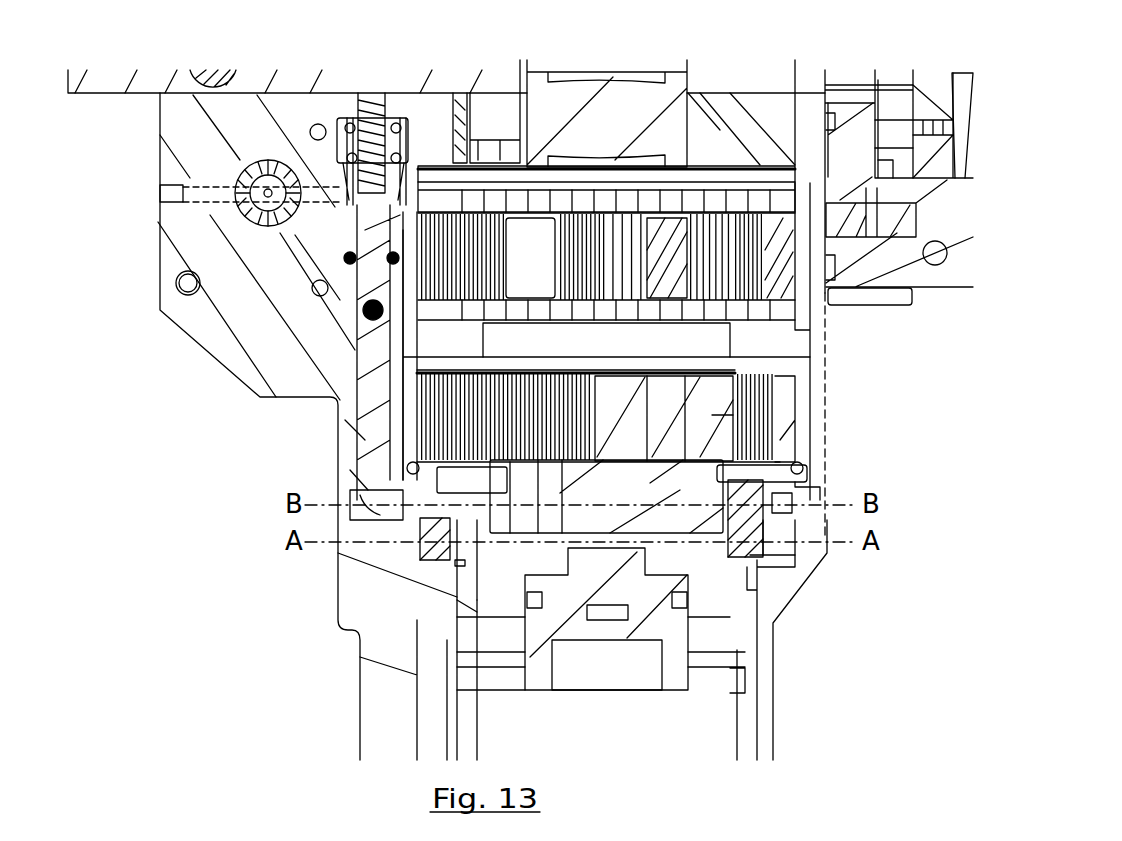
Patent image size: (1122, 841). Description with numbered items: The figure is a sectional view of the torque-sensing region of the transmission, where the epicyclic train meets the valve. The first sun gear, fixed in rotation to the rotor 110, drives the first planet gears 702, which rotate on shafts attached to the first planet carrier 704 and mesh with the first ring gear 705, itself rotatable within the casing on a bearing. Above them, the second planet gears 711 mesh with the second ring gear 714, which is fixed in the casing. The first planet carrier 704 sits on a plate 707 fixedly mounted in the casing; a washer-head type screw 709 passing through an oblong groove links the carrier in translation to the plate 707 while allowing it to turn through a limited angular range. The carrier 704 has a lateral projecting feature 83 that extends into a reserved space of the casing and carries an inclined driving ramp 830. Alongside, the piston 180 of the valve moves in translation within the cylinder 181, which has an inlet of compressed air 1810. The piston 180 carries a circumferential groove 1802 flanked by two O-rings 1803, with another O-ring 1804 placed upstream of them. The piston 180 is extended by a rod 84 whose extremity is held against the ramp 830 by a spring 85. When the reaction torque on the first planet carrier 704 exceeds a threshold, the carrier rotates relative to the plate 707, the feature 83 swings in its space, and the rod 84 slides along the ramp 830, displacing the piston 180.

The piston 180 is at (340, 110).
The O-ring 1804 is at (356, 100).
The spring 85 is at (374, 100).
The cylinder 181 is at (398, 128).
The second planet gears 711 is at (713, 253).
The inlet of compressed air 1810 is at (350, 167).
The O-rings 1803 is at (345, 237).
The circumferential groove 1802 is at (350, 258).
The rod 84 is at (382, 442).
The first ring gear 705 is at (435, 452).
The inclined driving ramp 830 is at (343, 566).
The lateral projecting feature 83 is at (418, 508).
The washer-head type screw 709 is at (447, 548).
The second ring gear 714 is at (787, 287).
The first planet gears 702 is at (710, 415).
The first planet carrier 704 is at (780, 502).
The plate 707 is at (720, 598).
The rotor 110 is at (667, 663).